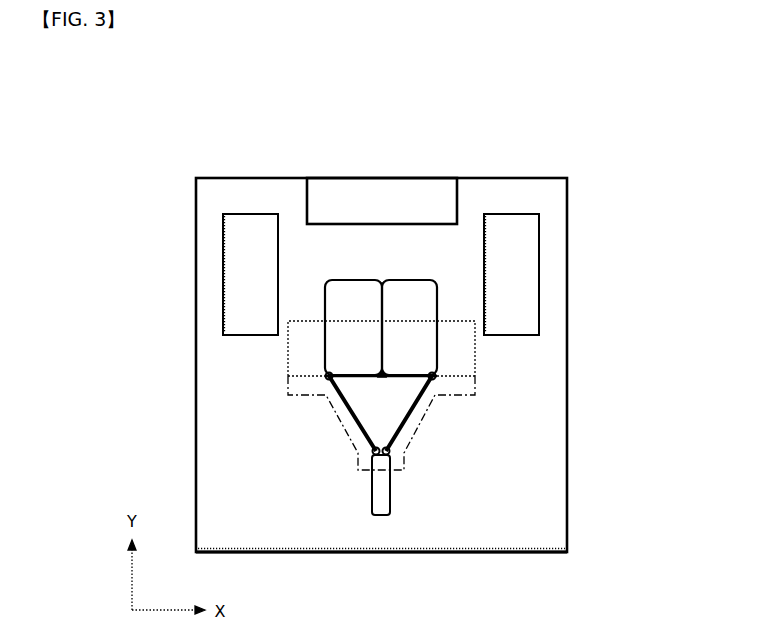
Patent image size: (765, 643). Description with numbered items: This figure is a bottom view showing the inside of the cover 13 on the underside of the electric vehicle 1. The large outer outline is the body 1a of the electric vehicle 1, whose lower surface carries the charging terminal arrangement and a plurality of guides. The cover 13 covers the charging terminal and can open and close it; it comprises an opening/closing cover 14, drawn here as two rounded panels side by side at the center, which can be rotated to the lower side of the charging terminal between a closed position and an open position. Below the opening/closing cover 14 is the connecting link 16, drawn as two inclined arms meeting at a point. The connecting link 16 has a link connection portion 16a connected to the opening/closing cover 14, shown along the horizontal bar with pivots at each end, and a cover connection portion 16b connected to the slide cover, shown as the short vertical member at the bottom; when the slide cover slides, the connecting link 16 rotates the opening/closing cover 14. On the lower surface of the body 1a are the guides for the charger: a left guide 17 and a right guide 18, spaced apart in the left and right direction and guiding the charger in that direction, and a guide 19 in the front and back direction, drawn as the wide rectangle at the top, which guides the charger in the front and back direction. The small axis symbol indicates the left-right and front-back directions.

The electric vehicle 1 is at (593, 445).
The body 1a is at (533, 490).
The cover 13 is at (630, 280).
The opening/closing cover 14 is at (352, 300).
The connecting link 16 is at (355, 412).
The link connection portion 16a is at (329, 376).
The cover connection portion 16b is at (376, 455).
The left guide 17 is at (238, 272).
The right guide 18 is at (525, 246).
The guide in the front and back direction 19 is at (403, 200).